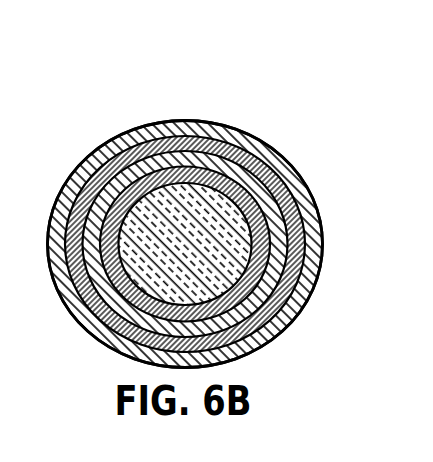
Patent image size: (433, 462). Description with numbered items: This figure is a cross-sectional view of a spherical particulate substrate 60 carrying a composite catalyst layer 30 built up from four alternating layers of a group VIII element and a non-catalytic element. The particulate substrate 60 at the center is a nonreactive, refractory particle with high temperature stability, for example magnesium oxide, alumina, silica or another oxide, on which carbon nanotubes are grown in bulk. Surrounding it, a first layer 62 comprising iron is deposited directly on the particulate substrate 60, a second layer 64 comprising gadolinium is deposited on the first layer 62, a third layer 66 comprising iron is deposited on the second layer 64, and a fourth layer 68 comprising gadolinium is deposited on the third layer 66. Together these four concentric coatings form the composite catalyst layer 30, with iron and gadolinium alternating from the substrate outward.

The composite catalyst layer 30 is at (249, 137).
The particulate substrate 60 is at (318, 276).
The first layer 62 is at (284, 265).
The second layer 64 is at (138, 160).
The third layer 66 is at (273, 170).
The fourth layer 68 is at (322, 213).